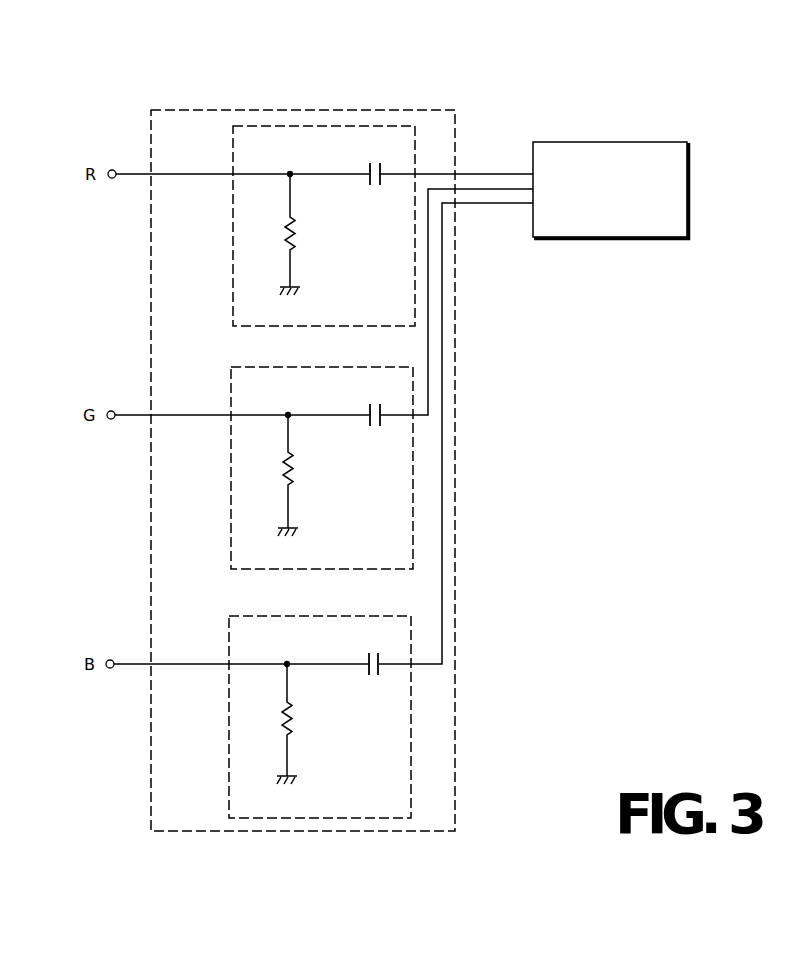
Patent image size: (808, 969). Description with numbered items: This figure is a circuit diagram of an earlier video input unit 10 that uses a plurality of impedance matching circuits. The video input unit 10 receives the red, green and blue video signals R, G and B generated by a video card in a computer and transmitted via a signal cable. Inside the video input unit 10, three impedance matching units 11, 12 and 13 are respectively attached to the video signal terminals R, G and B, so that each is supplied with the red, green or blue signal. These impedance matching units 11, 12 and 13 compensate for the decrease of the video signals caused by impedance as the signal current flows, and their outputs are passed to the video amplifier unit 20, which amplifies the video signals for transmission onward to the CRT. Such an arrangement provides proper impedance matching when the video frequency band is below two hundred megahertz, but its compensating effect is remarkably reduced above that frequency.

The video input unit 10 is at (325, 110).
The impedance matching unit 11 is at (233, 256).
The impedance matching unit 12 is at (231, 500).
The impedance matching unit 13 is at (229, 752).
The video amplifier unit 20 is at (602, 141).